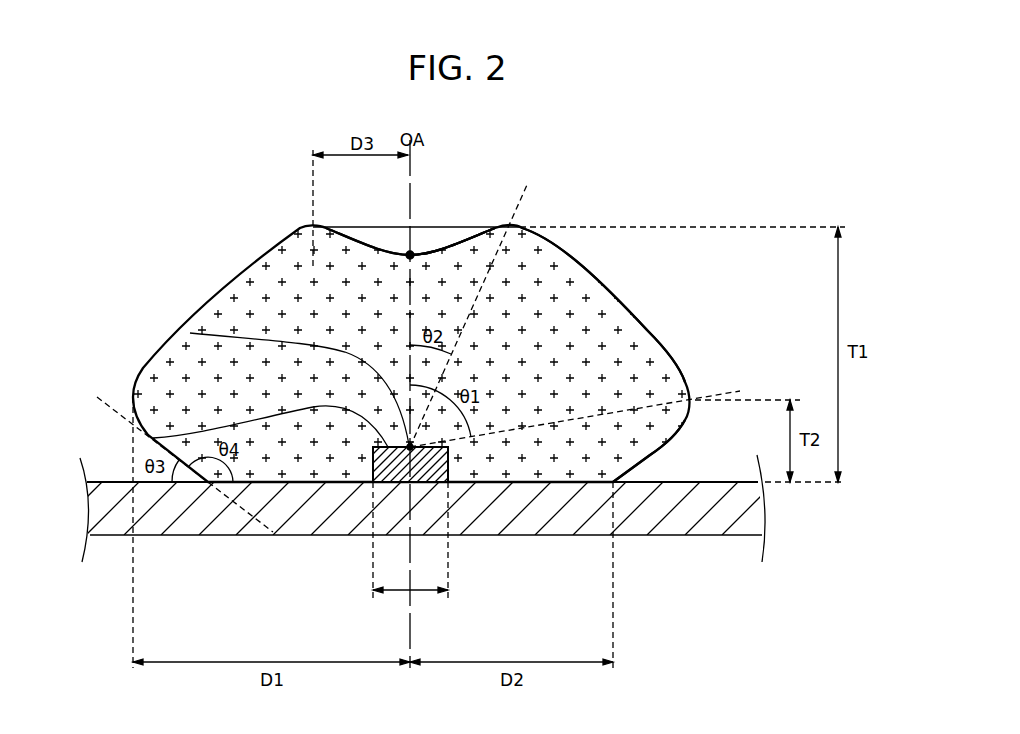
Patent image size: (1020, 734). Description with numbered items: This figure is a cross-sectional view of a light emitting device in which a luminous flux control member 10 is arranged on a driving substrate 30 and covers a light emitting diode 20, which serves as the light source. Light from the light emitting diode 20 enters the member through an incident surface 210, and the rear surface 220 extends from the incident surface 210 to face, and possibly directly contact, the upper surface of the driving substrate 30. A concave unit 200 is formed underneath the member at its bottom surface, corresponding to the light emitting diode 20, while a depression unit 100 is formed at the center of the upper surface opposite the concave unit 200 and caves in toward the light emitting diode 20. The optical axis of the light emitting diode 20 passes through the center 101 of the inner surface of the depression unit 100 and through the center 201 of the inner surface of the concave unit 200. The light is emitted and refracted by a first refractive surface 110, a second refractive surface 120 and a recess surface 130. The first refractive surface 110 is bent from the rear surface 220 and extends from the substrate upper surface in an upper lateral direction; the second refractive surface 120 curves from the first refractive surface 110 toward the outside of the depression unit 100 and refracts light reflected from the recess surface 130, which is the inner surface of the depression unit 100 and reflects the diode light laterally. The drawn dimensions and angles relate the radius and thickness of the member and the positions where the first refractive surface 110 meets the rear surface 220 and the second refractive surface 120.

The luminous flux control member 10 is at (550, 210).
The light emitting diode 20 is at (373, 472).
The driving substrate 30 is at (490, 520).
The depression unit 100 is at (390, 236).
The center of inner surface of depression unit 101 is at (412, 252).
The first refractive surface 110 is at (648, 455).
The second refractive surface 120 is at (602, 285).
The recess surface 130 is at (453, 238).
The concave unit 200 is at (410, 550).
The center of inner surface of concave unit 201 is at (190, 333).
The incident surface 210 is at (153, 438).
The rear surface 220 is at (555, 483).